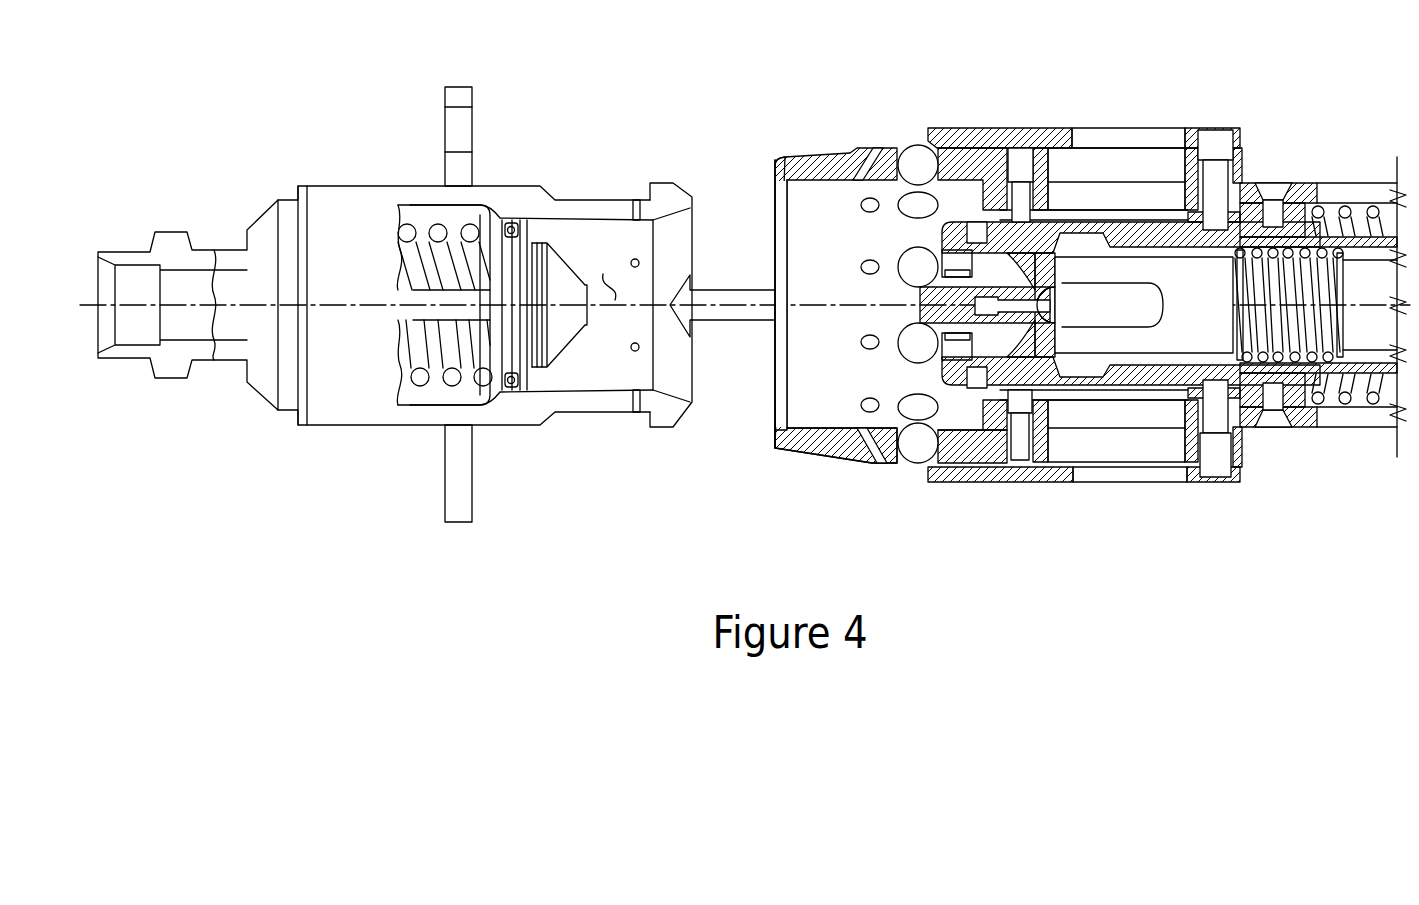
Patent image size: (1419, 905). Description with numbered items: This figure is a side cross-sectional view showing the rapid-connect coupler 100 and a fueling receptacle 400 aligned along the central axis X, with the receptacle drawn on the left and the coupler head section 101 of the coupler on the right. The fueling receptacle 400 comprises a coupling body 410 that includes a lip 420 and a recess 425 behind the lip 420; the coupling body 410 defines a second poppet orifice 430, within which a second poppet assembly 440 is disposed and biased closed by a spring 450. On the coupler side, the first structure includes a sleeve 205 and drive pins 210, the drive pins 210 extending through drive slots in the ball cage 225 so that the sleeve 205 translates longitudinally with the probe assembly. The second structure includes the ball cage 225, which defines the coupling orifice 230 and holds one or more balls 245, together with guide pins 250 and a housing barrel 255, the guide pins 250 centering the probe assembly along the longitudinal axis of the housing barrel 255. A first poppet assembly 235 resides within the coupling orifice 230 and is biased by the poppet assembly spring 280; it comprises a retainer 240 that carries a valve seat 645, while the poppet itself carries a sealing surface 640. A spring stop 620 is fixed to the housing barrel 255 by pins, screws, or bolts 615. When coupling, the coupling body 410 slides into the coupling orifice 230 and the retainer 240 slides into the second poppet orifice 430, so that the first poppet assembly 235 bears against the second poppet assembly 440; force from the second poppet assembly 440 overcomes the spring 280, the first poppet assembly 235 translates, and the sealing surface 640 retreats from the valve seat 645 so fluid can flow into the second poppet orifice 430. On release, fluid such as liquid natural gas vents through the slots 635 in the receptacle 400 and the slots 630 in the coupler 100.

The rapid-connect coupler 100 is at (1068, 111).
The coupler head section 101 is at (815, 82).
The sleeve 205 is at (950, 127).
The drive pins 210 is at (1218, 128).
The ball cage 225 is at (827, 459).
The coupling orifice 230 is at (805, 200).
The first poppet assembly 235 is at (923, 308).
The retainer 240 is at (942, 237).
The balls 245 is at (910, 465).
The guide pins 250 is at (1018, 462).
The housing barrel 255 is at (1133, 413).
The poppet assembly spring 280 is at (1338, 277).
The fueling receptacle 400 is at (322, 168).
The coupling body 410 is at (588, 412).
The lip 420 is at (660, 428).
The recess 425 is at (638, 192).
The second poppet orifice 430 is at (676, 261).
The second poppet assembly 440 is at (573, 343).
The spring 450 is at (452, 362).
The pins, screws, or bolts 615 is at (1271, 198).
The spring stop 620 is at (1292, 407).
The slots 630 is at (880, 147).
The slots 635 is at (633, 258).
The sealing surface 640 is at (1038, 333).
The valve seat 645 is at (1036, 252).